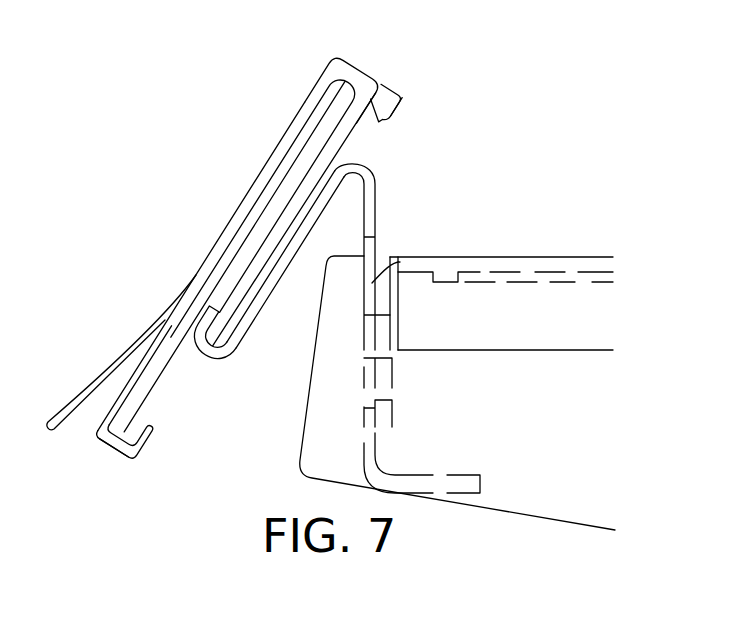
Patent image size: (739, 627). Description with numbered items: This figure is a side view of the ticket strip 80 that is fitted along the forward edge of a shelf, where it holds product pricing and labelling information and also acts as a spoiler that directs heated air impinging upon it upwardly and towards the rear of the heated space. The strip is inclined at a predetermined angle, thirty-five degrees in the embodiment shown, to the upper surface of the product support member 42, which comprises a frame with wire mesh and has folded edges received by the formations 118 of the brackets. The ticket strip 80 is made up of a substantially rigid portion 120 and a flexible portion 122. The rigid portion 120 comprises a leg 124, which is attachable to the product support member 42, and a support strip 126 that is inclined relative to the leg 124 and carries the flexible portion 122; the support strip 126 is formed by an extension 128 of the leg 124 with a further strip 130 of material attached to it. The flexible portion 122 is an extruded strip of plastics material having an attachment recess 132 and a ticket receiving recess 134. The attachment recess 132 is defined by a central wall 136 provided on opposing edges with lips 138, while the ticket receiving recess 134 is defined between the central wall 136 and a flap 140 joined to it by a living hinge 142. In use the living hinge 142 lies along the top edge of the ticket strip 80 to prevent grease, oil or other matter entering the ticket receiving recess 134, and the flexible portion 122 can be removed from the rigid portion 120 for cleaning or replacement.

The product support member 42 is at (583, 256).
The ticket strip 80 is at (250, 134).
The formations 118 is at (370, 277).
The rigid portion 120 is at (387, 156).
The flexible portion 122 is at (165, 287).
The leg 124 is at (368, 200).
The support strip 126 is at (243, 296).
The extension 128 is at (205, 364).
The further strip 130 is at (376, 80).
The attachment recess 132 is at (145, 412).
The ticket receiving recess 134 is at (323, 108).
The central wall 136 is at (240, 244).
The lips 138 is at (403, 97).
The flap 140 is at (240, 187).
The living hinge 142 is at (340, 69).